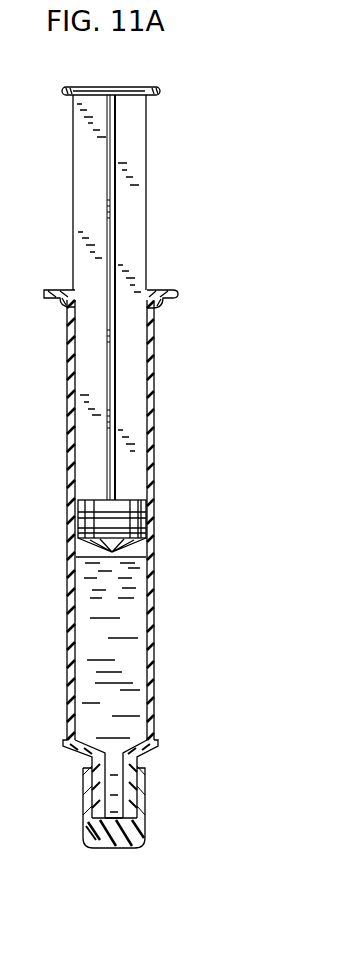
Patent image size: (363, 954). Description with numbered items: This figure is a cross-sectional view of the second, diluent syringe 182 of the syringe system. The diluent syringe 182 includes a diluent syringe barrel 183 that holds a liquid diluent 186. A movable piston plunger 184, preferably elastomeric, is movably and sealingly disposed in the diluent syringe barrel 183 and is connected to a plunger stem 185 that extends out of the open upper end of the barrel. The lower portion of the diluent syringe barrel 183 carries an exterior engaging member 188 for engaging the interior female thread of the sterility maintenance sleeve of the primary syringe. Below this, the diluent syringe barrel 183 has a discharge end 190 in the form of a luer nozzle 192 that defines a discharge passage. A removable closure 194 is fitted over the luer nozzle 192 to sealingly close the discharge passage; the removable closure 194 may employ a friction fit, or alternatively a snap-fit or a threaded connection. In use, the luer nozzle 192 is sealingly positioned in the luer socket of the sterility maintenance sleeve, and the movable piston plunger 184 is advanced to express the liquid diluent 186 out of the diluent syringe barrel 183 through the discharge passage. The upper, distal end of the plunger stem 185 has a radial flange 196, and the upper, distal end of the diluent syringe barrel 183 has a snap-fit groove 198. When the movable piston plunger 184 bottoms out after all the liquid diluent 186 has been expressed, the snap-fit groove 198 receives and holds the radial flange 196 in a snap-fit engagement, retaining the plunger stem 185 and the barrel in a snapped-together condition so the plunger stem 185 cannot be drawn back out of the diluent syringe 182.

The plunger stem 185 is at (153, 171).
The radial flange 196 is at (158, 91).
The snap-fit groove 198 is at (70, 300).
The diluent syringe 182 is at (155, 388).
The movable piston plunger 184 is at (150, 515).
The diluent syringe barrel 183 is at (157, 612).
The liquid diluent 186 is at (110, 671).
The exterior engaging member 188 is at (160, 743).
The discharge end 190 is at (130, 795).
The luer nozzle 192 is at (88, 834).
The removable closure 194 is at (140, 846).